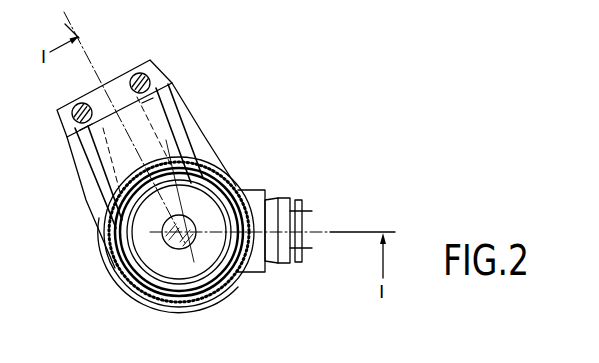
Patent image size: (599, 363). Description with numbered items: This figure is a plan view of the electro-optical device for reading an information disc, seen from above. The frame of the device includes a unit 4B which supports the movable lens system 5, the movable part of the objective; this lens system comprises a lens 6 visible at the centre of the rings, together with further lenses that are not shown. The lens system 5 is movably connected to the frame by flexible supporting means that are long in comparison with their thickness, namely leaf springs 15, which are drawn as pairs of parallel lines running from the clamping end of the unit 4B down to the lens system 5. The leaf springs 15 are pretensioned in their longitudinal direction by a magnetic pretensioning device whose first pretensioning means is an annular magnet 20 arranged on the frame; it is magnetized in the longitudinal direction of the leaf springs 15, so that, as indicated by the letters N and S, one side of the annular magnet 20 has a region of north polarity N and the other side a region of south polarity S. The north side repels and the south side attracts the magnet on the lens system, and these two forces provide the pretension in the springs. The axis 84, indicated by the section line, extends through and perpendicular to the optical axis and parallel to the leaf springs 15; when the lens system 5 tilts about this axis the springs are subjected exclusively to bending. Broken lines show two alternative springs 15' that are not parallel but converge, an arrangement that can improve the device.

The axis 84 is at (84, 11).
The unit 4B is at (193, 130).
The leaf spring 15 is at (116, 151).
The alternative spring 15' is at (110, 95).
The lens 6 is at (181, 221).
The movable lens system 5 is at (205, 218).
The annular magnet 20 is at (110, 258).
The region of south polarity S is at (208, 287).
The region of north polarity N is at (124, 127).